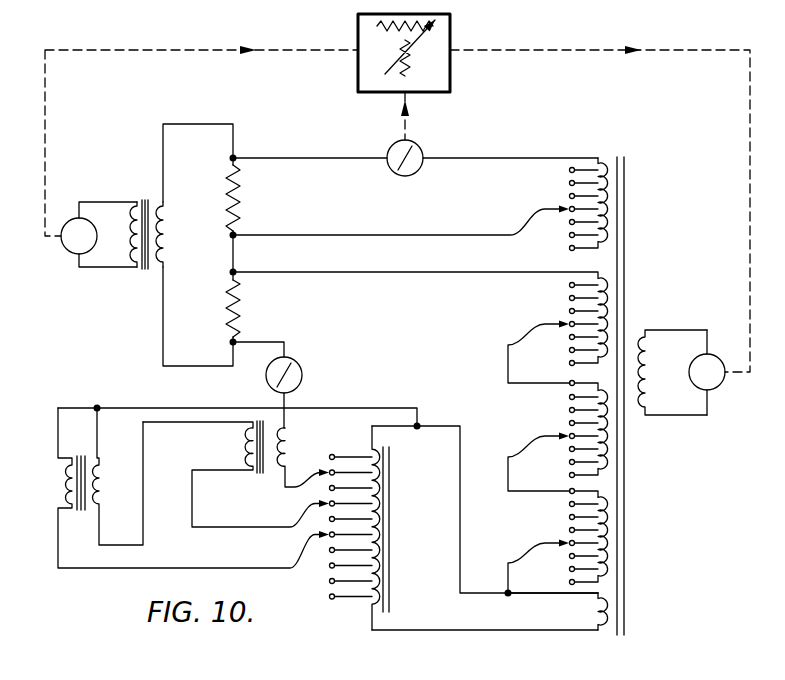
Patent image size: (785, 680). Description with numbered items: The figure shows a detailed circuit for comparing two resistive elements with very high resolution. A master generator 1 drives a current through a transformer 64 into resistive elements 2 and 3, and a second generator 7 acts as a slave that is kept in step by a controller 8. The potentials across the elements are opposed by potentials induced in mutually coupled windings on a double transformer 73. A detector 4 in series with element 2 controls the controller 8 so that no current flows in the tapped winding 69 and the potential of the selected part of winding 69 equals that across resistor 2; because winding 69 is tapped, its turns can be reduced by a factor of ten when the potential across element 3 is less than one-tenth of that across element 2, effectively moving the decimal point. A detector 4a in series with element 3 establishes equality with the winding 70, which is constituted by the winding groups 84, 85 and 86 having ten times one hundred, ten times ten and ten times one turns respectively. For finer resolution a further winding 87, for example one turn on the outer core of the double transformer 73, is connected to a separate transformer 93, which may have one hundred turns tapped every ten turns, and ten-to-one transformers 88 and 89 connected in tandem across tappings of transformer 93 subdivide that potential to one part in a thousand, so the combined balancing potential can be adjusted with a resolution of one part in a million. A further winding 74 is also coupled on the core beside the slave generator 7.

The generator 1 is at (74, 256).
The resistive element 2 is at (225, 187).
The resistive element 3 is at (228, 303).
The detector 4 is at (424, 148).
The detector 4a is at (302, 380).
The generator 7 is at (724, 383).
The controller 8 is at (452, 42).
The transformer 64 is at (146, 272).
The winding 69 is at (565, 192).
The winding 70 is at (507, 419).
The double transformer core 73 is at (630, 634).
The winding 74 is at (654, 402).
The winding 84 is at (562, 303).
The winding 85 is at (568, 408).
The winding 86 is at (565, 518).
The winding 87 is at (612, 635).
The transformer 88 is at (258, 477).
The transformer 89 is at (92, 510).
The transformer 93 is at (368, 606).